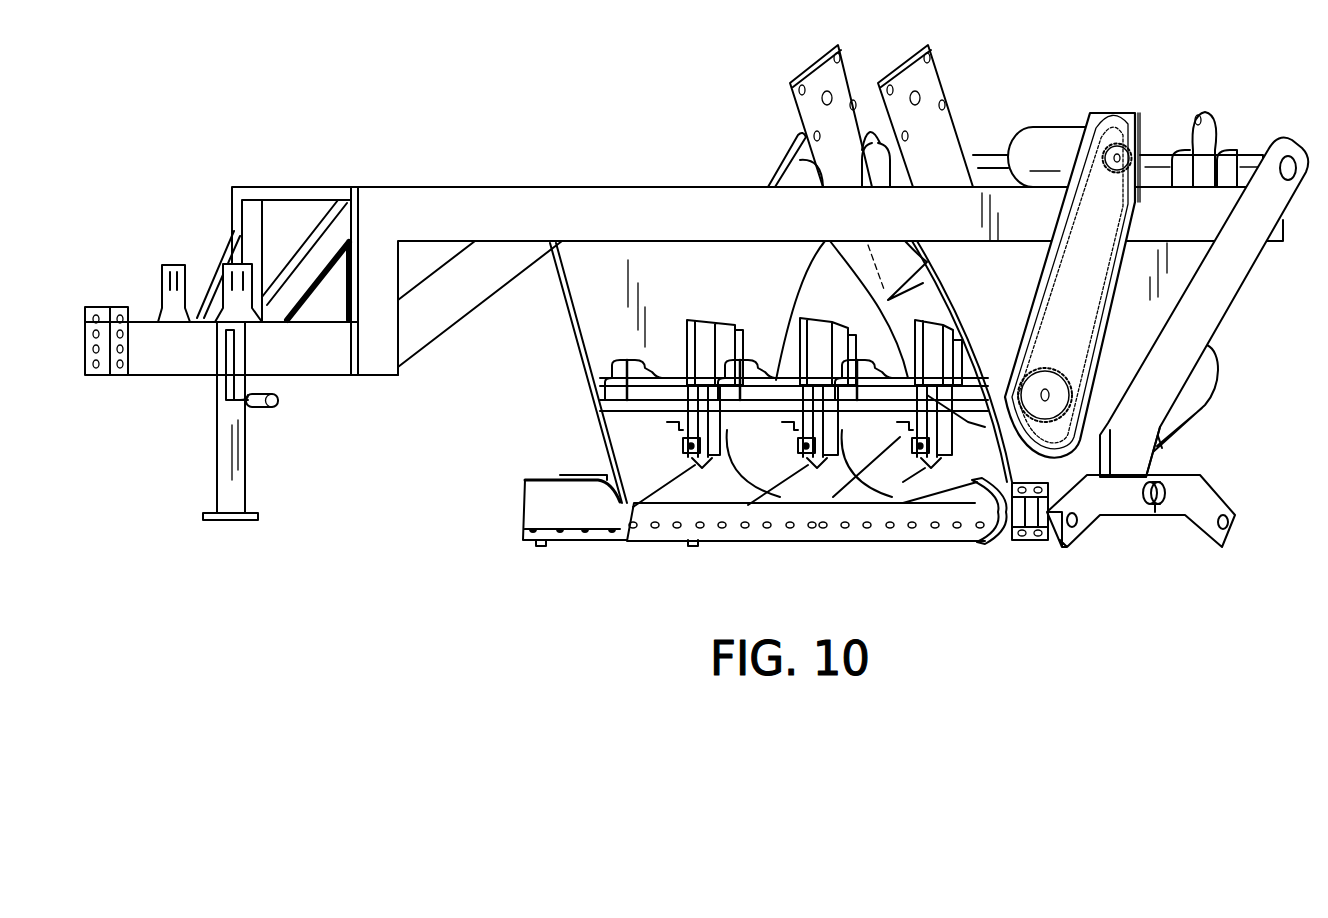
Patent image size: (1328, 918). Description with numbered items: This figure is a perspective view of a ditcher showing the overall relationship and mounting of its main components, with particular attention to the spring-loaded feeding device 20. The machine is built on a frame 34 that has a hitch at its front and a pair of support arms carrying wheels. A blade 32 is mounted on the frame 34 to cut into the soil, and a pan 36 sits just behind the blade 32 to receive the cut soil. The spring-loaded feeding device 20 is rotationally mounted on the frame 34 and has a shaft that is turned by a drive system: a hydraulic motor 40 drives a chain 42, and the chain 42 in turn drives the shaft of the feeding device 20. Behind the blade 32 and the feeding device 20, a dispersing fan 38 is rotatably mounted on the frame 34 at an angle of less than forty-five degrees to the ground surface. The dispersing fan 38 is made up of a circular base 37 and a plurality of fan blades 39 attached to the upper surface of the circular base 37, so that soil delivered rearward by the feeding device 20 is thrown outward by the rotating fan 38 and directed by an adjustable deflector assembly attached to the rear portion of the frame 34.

The spring-loaded feeding device 20 is at (725, 290).
The blade 32 is at (803, 535).
The frame 34 is at (672, 200).
The pan 36 is at (680, 492).
The circular base 37 is at (1190, 398).
The dispersing fan 38 is at (1227, 348).
The fan blades 39 is at (880, 487).
The hydraulic motor 40 is at (1030, 133).
The chain 42 is at (1092, 190).